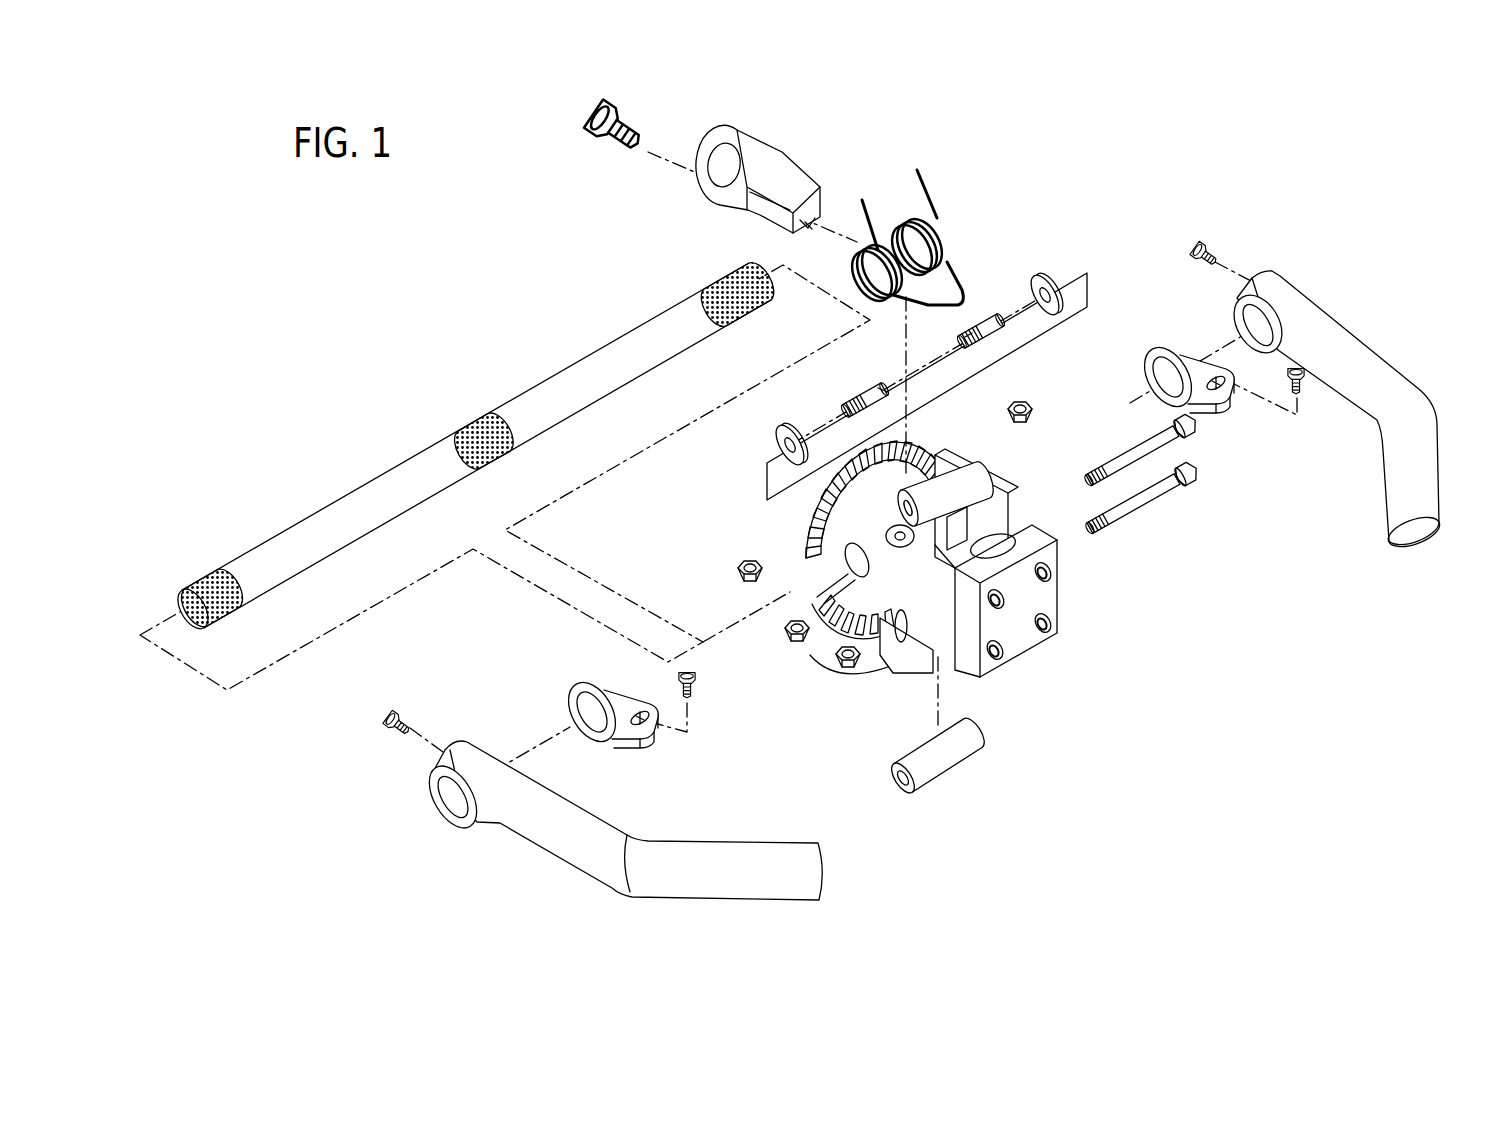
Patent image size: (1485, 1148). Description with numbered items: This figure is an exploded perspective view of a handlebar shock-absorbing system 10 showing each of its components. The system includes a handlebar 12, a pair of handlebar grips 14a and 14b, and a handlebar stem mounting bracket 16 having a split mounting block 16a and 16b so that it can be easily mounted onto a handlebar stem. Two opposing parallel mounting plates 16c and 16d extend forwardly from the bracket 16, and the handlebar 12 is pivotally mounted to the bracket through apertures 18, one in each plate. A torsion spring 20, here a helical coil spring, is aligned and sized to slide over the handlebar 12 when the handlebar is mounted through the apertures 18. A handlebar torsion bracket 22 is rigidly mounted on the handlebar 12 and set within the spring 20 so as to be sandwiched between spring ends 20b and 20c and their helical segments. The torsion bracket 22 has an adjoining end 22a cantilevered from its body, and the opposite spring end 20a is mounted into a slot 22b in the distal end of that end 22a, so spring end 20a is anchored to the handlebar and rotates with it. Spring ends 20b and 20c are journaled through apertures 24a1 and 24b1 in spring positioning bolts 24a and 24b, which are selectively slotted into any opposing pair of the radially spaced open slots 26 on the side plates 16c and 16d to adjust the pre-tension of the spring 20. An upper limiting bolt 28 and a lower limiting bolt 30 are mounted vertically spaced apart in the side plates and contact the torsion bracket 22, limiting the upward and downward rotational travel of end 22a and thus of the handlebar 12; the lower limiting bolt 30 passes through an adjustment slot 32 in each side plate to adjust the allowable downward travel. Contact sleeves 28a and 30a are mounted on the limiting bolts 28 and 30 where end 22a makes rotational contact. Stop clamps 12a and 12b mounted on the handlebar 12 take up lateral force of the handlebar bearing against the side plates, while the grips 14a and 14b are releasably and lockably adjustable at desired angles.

The handlebar shock-absorbing system 10 is at (560, 292).
The handlebar 12 is at (413, 466).
The stop clamp 12a is at (604, 677).
The stop clamp 12b is at (1188, 347).
The handlebar grip 14a is at (690, 850).
The handlebar grip 14b is at (1303, 310).
The handlebar stem mounting bracket 16 is at (1038, 654).
The split mounting block 16a is at (1023, 522).
The split mounting block 16b is at (1030, 548).
The mounting plate 16c is at (842, 628).
The mounting plate 16d is at (963, 467).
The aperture 18 is at (762, 620).
The torsion spring 20 is at (943, 237).
The spring end 20a is at (962, 296).
The spring end 20b is at (863, 203).
The spring end 20c is at (933, 178).
The handlebar torsion bracket 22 is at (770, 138).
The adjoining end 22a is at (780, 221).
The slot 22b is at (827, 218).
The spring positioning bolt 24a is at (868, 397).
The aperture 24a1 is at (870, 385).
The spring positioning bolt 24b is at (990, 350).
The aperture 24b1 is at (973, 332).
The slot 26 is at (740, 584).
The upper limiting bolt 28 is at (1172, 448).
The contact sleeve 28a is at (993, 470).
The lower limiting bolt 30 is at (1150, 500).
The contact sleeve 30a is at (960, 757).
The adjustment slot 32 is at (917, 633).